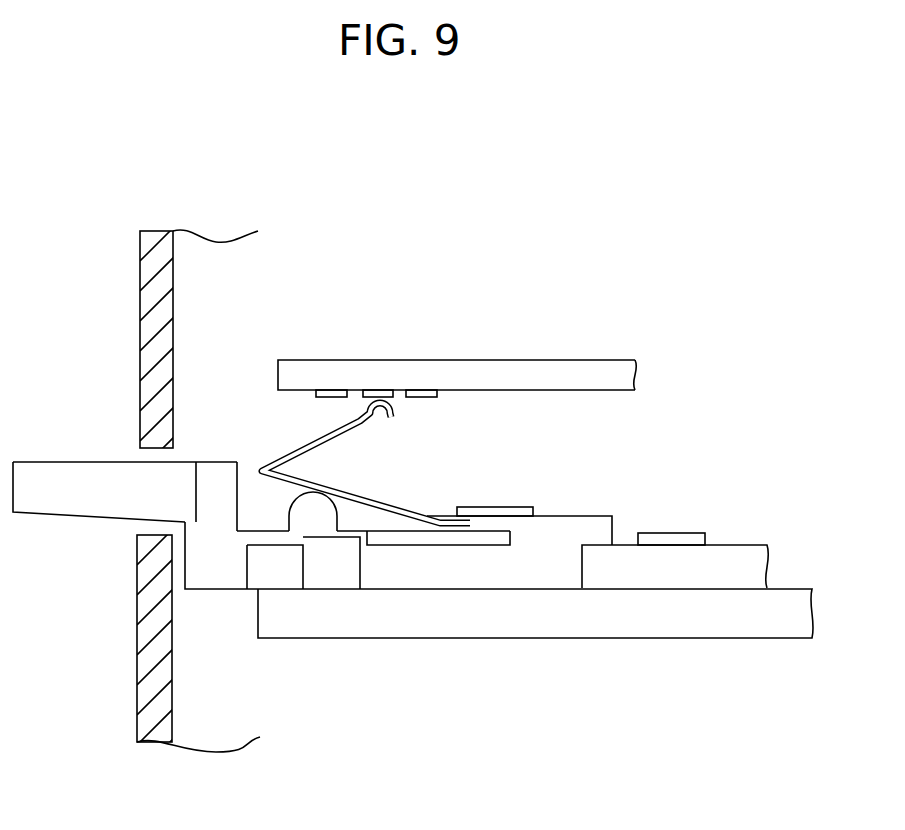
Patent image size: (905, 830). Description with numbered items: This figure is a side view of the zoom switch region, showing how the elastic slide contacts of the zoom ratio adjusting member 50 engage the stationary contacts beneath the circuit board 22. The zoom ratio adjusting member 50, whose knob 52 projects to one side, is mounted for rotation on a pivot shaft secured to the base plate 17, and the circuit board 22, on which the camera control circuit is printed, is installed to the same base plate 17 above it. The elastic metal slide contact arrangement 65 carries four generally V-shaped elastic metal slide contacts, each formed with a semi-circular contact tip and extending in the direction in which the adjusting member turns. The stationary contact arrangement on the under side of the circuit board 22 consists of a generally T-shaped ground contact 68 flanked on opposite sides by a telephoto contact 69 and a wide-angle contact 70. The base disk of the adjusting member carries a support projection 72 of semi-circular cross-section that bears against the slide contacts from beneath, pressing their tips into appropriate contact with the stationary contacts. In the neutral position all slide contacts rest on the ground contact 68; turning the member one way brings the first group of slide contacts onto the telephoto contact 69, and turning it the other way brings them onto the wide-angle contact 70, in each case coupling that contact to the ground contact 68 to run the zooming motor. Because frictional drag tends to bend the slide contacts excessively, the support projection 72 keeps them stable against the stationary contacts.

The base plate 17 is at (763, 652).
The circuit board 22 is at (605, 347).
The zoom ratio adjusting member 50 is at (665, 512).
The knob 52 is at (55, 479).
The elastic metal slide contact arrangement 65 is at (474, 514).
The ground contact 68 is at (383, 392).
The telephoto contact 69 is at (428, 392).
The wide-angle contact 70 is at (318, 392).
The support projection 72 is at (305, 513).